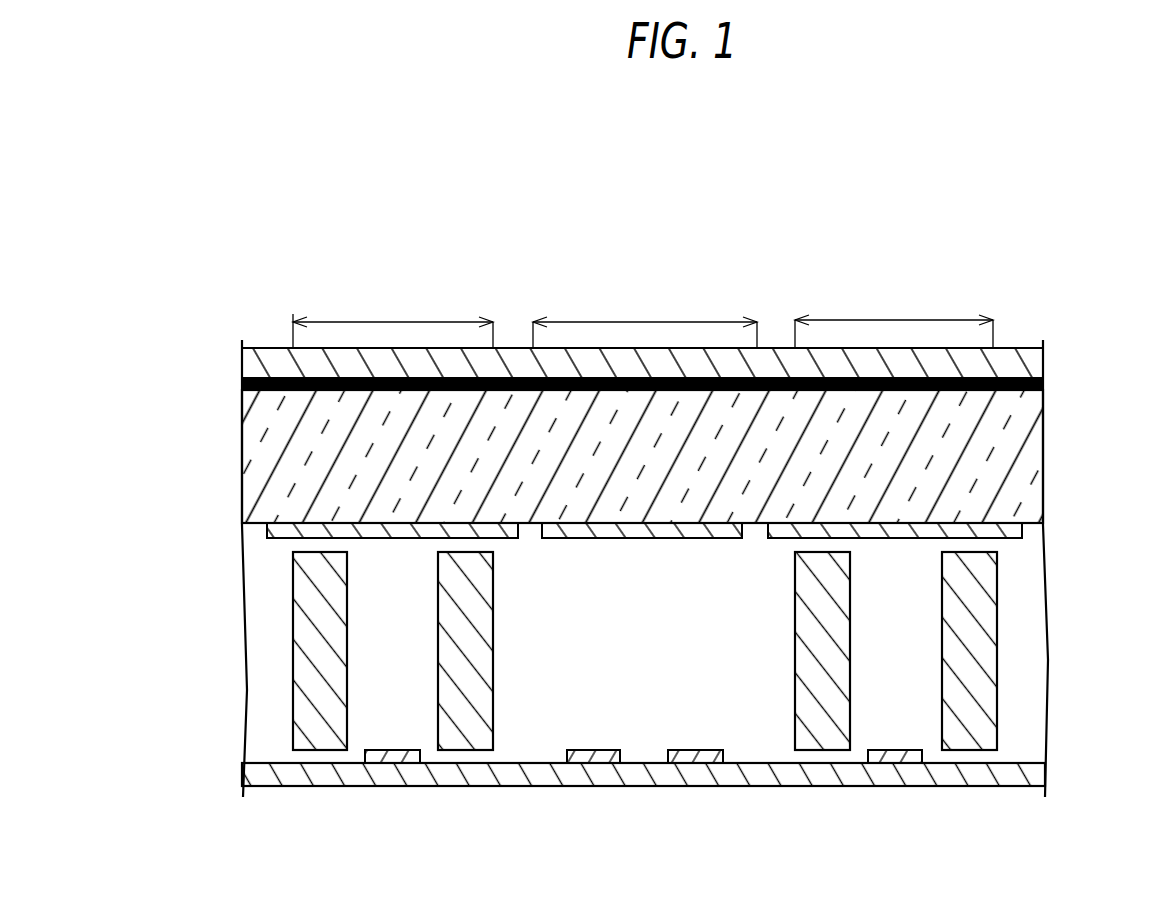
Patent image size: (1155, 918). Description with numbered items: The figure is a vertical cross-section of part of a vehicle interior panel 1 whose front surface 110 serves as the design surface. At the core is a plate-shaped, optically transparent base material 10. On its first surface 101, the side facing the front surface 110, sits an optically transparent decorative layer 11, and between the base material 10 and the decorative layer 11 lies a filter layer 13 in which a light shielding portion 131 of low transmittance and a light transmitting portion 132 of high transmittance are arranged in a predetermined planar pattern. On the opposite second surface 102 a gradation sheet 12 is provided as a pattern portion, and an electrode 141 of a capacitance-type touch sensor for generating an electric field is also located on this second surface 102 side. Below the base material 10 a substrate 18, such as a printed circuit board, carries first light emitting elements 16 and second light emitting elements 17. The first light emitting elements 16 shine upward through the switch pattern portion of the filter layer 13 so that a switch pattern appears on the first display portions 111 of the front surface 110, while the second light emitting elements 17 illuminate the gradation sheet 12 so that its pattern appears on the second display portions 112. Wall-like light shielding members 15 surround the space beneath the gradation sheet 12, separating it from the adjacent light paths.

The vehicle interior panel 1 is at (1047, 208).
The base material 10 is at (1027, 453).
The first surface 101 is at (773, 375).
The second surface 102 is at (530, 523).
The decorative layer 11 is at (1028, 362).
The front surface 110 is at (263, 347).
The first display portion 111 is at (643, 312).
The second display portion 112 is at (645, 312).
The gradation sheet 12 is at (652, 535).
The filter layer 13 is at (565, 236).
The light shielding portion 131 is at (458, 375).
The light transmitting portion 132 is at (508, 377).
The electrode 141 is at (272, 530).
The light shielding member 15 is at (310, 648).
The first light emitting element 16 is at (393, 760).
The second light emitting element 17 is at (593, 760).
The substrate 18 is at (1038, 772).